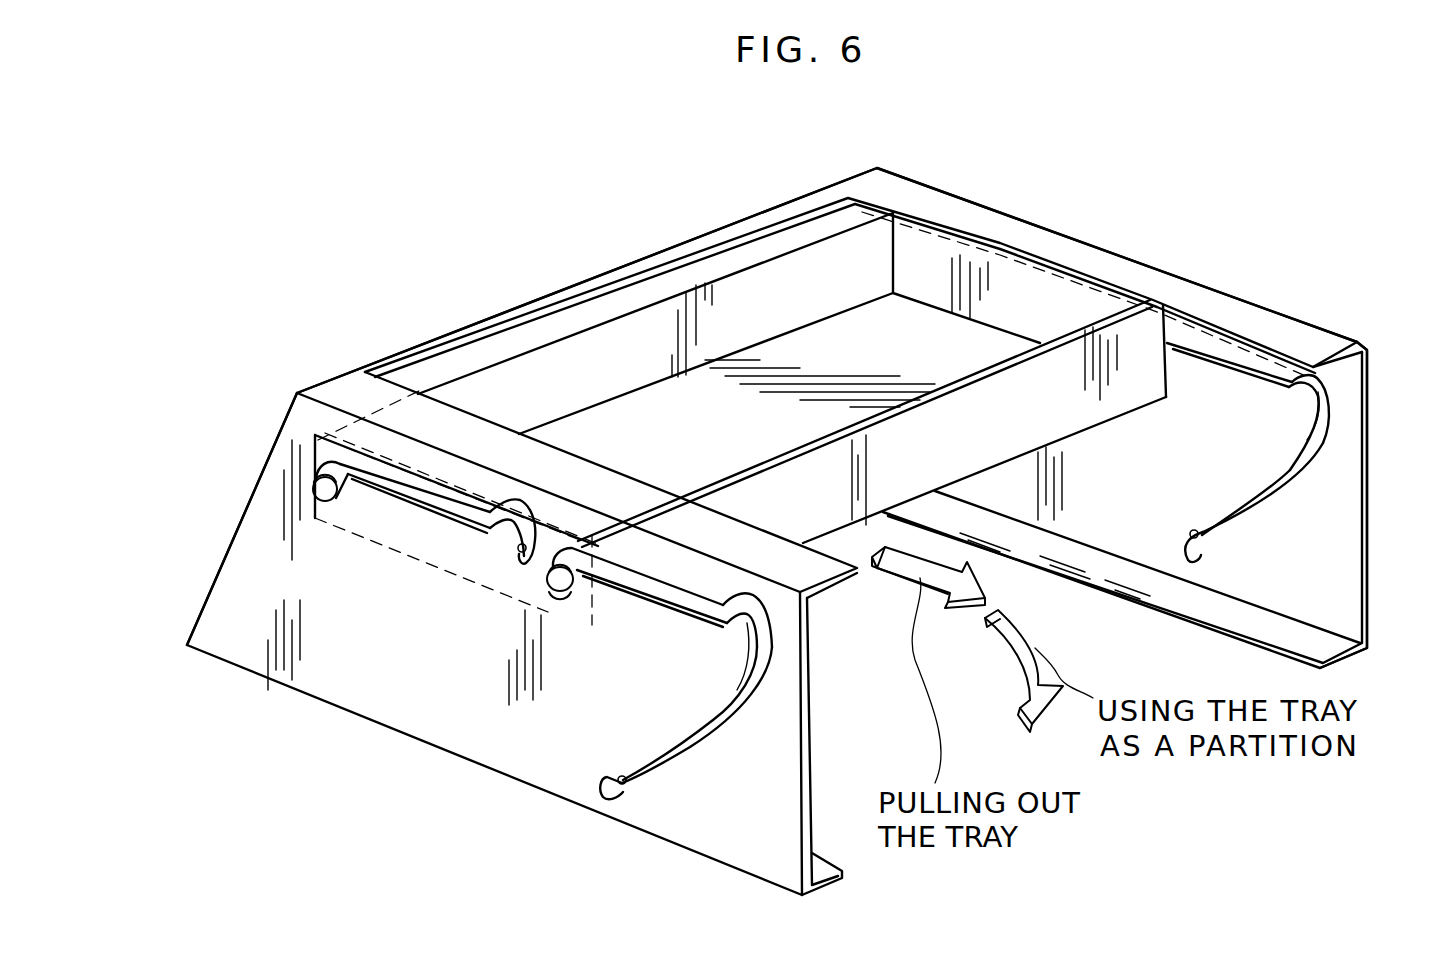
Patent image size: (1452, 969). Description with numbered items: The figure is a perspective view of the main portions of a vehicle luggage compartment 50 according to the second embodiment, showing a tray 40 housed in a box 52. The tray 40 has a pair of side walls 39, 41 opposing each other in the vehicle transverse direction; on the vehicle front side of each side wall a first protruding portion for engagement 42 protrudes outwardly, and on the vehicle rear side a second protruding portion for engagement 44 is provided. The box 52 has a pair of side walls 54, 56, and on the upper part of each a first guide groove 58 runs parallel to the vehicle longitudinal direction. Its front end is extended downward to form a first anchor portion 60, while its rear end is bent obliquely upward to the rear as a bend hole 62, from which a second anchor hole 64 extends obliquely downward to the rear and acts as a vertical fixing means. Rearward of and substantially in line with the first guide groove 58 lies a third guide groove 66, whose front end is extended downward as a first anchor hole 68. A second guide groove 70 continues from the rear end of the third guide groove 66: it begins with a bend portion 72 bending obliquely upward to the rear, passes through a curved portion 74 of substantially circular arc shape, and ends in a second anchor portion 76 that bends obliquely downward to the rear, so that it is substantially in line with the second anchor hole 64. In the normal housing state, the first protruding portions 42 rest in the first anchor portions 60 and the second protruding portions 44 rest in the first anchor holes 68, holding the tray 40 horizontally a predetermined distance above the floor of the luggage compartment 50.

The side wall 39 is at (457, 548).
The tray 40 is at (625, 318).
The side wall 41 is at (1177, 384).
The first protruding portion for engagement 42 is at (318, 488).
The second protruding portion for engagement 44 is at (554, 593).
The vehicle luggage compartment 50 is at (634, 160).
The box 52 is at (936, 186).
The side wall 54 is at (265, 508).
The side wall 56 is at (1128, 268).
The first guide groove 58 is at (412, 505).
The first anchor portion 60 is at (345, 502).
The bend hole 62 is at (487, 497).
The second anchor hole 64 is at (525, 556).
The third guide groove 66 is at (670, 612).
The first anchor hole 68 is at (568, 598).
The second guide groove 70 is at (730, 744).
The bend portion 72 is at (755, 614).
The curved portion 74 is at (748, 705).
The second anchor portion 76 is at (625, 782).